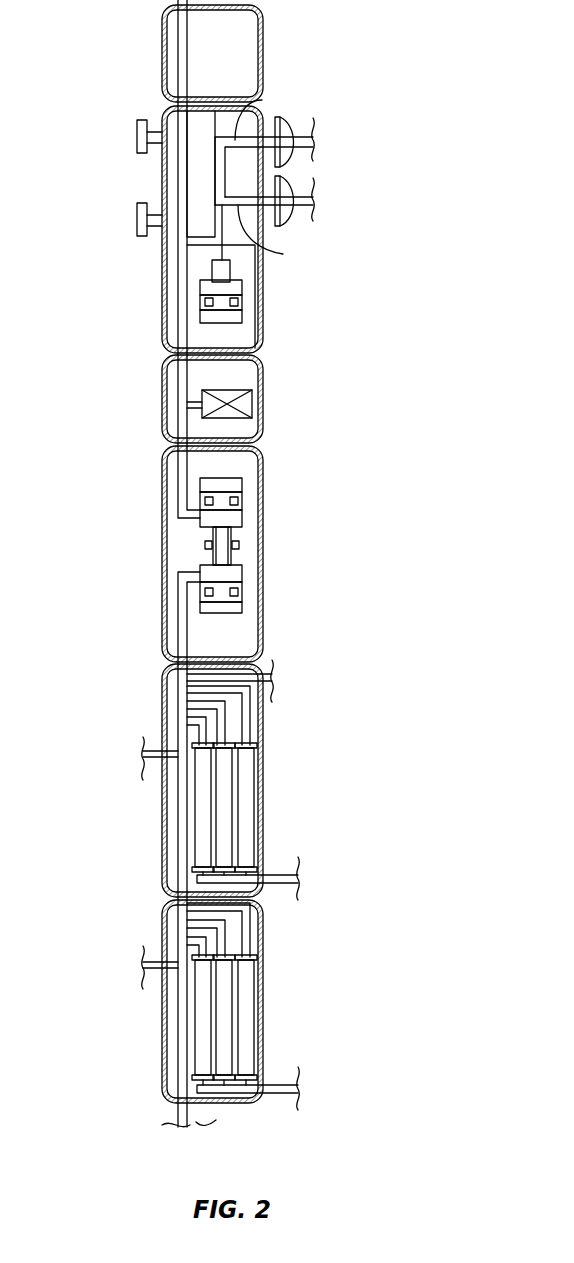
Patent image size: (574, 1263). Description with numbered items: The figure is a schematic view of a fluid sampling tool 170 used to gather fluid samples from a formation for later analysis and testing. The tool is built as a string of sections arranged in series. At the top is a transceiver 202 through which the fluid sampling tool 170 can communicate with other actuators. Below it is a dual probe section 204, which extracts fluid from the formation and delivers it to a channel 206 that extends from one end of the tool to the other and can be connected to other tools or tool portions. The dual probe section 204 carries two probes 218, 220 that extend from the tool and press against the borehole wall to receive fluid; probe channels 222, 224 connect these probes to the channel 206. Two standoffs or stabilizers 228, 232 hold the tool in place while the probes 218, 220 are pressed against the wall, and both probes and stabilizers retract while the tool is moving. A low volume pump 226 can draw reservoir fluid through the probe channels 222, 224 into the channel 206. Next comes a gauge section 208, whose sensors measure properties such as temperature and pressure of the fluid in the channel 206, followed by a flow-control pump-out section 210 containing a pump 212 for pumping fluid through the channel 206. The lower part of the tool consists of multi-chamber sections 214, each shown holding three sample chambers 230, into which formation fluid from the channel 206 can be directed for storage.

The fluid sampling tool 170 is at (338, 72).
The transceiver 202 is at (163, 55).
The dual probe section 204 is at (164, 282).
The channel 206 is at (178, 323).
The gauge section 208 is at (164, 400).
The flow-control pump-out section 210 is at (164, 625).
The pump 212 is at (203, 545).
The multi-chamber section 214 is at (264, 732).
The probe 218 is at (297, 140).
The probe 220 is at (293, 210).
The probe channel 222 is at (262, 102).
The probe channel 224 is at (280, 237).
The low volume pump 226 is at (242, 302).
The standoff or stabilizer 228 is at (137, 137).
The sample chamber 230 is at (250, 770).
The standoff or stabilizer 232 is at (137, 220).